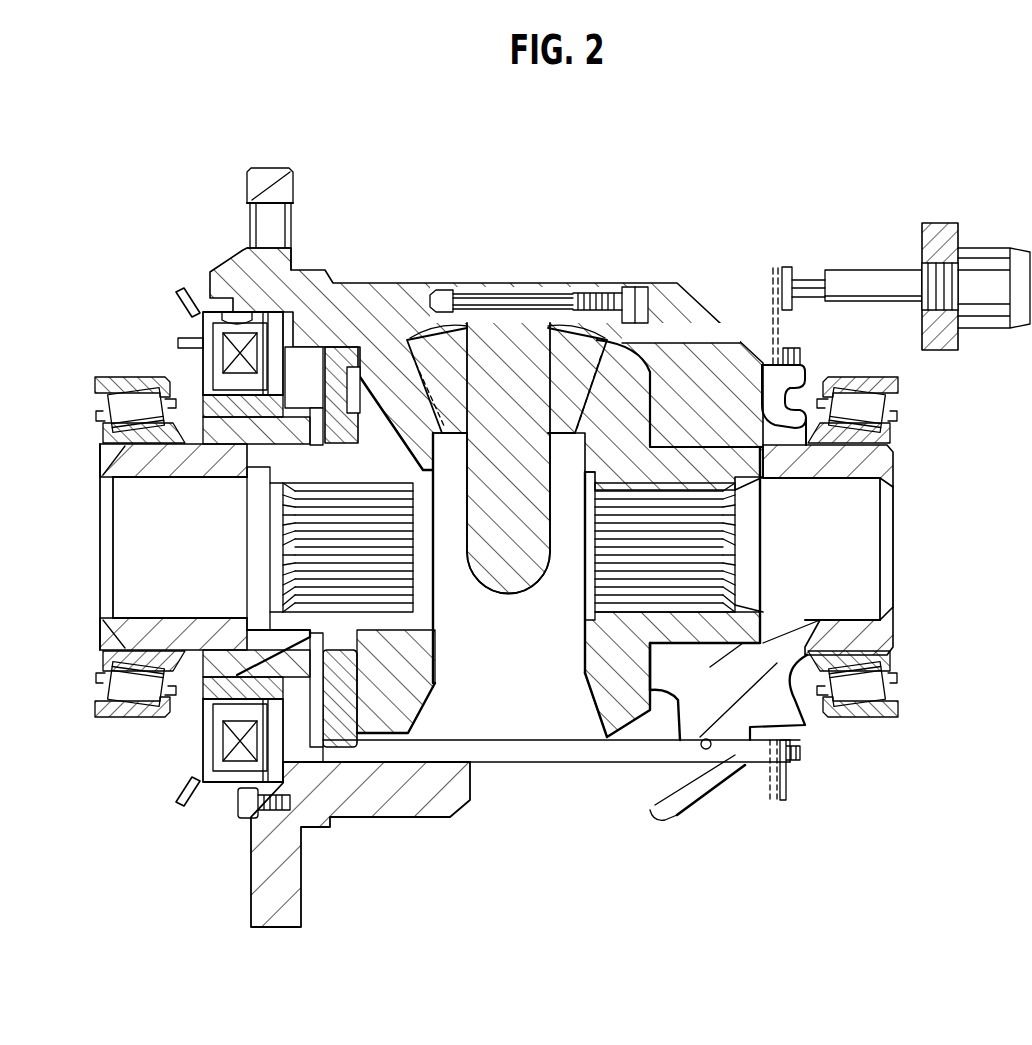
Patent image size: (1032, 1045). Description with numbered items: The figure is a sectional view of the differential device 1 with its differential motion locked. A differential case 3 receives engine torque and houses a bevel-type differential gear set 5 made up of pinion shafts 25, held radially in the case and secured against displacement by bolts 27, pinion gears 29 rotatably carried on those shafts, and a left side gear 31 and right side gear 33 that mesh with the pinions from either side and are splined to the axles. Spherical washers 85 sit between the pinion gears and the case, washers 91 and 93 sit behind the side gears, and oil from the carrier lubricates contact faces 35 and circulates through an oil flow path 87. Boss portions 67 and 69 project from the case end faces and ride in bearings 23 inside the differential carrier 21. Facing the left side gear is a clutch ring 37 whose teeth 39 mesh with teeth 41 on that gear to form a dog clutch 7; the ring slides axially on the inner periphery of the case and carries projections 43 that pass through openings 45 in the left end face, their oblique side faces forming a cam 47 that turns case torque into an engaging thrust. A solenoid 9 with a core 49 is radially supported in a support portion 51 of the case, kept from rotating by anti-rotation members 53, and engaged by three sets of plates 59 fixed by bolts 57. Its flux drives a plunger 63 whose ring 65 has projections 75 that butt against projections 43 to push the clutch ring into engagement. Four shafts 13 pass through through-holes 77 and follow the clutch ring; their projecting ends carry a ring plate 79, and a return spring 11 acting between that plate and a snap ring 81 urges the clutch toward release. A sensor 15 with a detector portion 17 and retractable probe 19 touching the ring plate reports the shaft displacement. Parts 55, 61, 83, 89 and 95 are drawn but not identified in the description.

The differential device 1 is at (150, 155).
The differential case 3 is at (254, 165).
The differential gear set 5 is at (552, 815).
The clutch 7 is at (367, 350).
The solenoid 9 is at (228, 312).
The return spring 11 is at (798, 350).
The shafts 13 is at (593, 748).
The sensor 15 is at (866, 230).
The detector portion 17 is at (885, 275).
The retractable probe 19 is at (790, 283).
The differential carrier 21 is at (946, 232).
The bearings 23 is at (135, 675).
The pinion shafts 25 is at (490, 513).
The bolts 27 is at (530, 300).
The pinion gears 29 is at (455, 420).
The left side gear 31 is at (435, 697).
The right side gear 33 is at (603, 680).
The contact faces 35 is at (283, 622).
The clutch ring 37 is at (333, 342).
The teeth 39 is at (360, 368).
The teeth 41 is at (477, 443).
The projections 43 is at (290, 397).
The openings 45 is at (247, 295).
The cam 47 is at (303, 345).
The core 49 is at (218, 357).
The support portion 51 is at (230, 317).
The anti-rotation members 53 is at (177, 293).
The retainer tab 55 is at (195, 780).
The bolts 57 is at (210, 805).
The plates 59 is at (238, 818).
The seal assembly 61 is at (205, 740).
The plunger 63 is at (200, 447).
The ring 65 is at (225, 447).
The boss portion 67 is at (206, 661).
The boss portion 69 is at (768, 664).
The projections 75 is at (250, 447).
The through-holes 77 is at (704, 740).
The ring plate 79 is at (780, 800).
The snap ring 81 is at (800, 750).
The hub 83 is at (467, 790).
The spherical washers 85 is at (470, 377).
The oil flow path 87 is at (280, 507).
The retainer 89 is at (720, 443).
The washer 91 is at (435, 630).
The washer 93 is at (590, 637).
The hidden bolt 95 is at (774, 262).